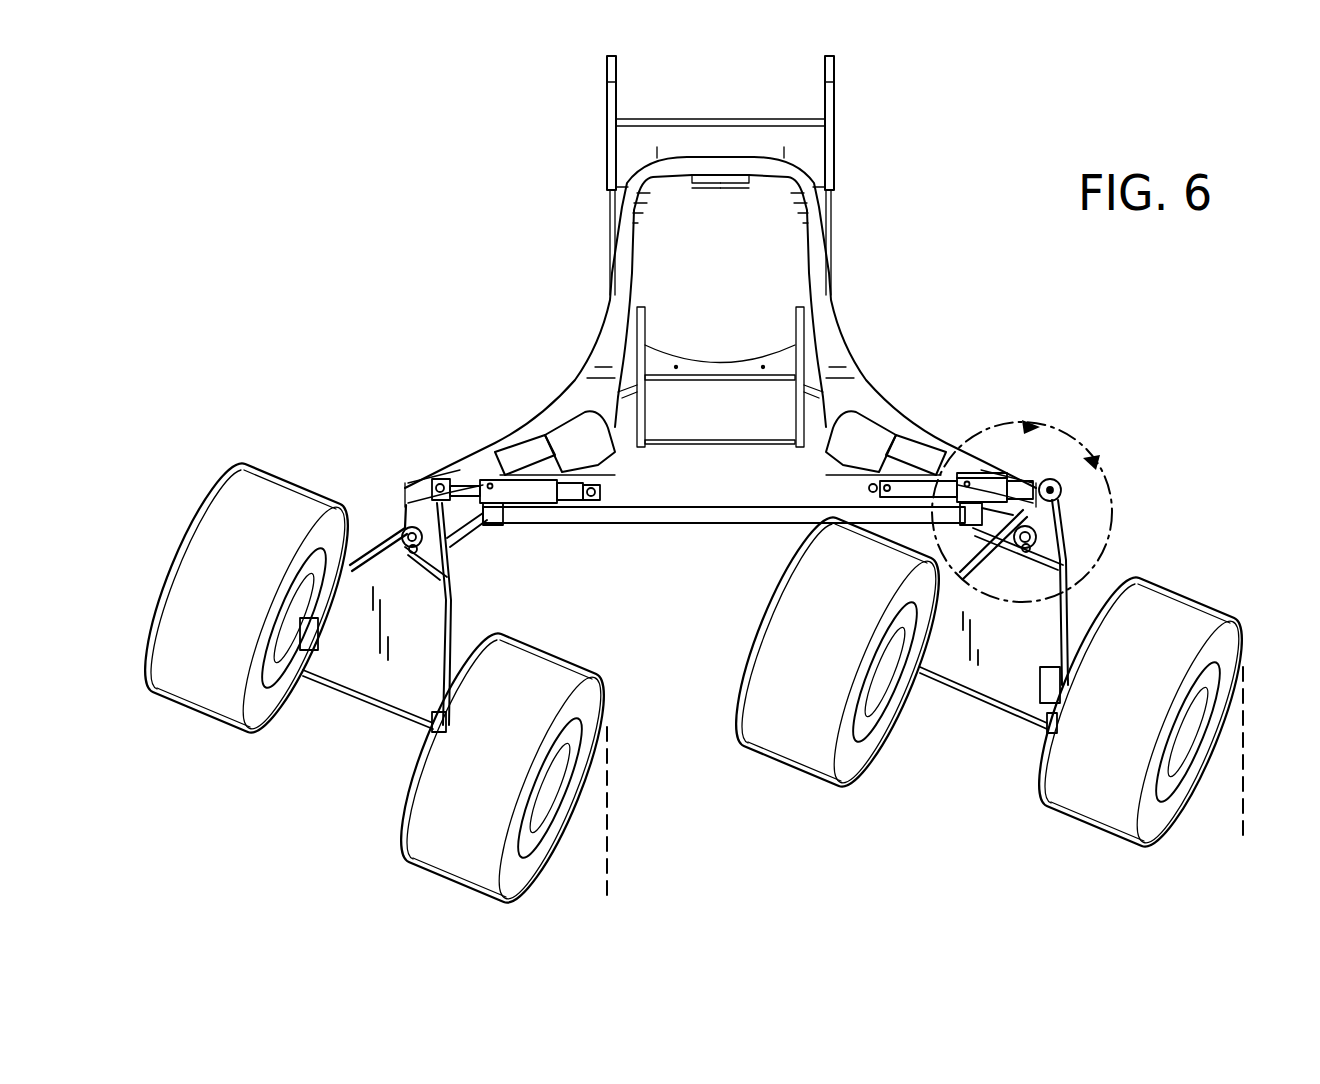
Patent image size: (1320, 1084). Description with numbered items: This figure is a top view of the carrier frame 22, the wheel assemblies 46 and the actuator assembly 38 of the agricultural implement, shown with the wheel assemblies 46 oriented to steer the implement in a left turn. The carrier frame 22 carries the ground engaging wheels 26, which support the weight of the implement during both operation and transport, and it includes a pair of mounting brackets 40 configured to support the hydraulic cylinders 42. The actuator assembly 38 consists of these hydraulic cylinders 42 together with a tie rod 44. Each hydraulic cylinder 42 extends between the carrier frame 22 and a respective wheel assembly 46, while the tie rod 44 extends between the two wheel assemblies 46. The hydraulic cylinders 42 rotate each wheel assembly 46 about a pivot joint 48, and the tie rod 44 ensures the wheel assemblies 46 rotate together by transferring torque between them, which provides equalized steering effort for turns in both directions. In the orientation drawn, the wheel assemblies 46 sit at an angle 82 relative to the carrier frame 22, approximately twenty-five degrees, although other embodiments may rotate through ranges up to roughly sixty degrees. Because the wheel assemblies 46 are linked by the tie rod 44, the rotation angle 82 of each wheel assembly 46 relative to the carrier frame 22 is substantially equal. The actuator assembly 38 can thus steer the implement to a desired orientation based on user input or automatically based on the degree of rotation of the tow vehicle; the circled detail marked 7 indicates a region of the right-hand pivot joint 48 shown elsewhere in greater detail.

The carrier frame 22 is at (820, 264).
The ground engaging wheels 26 is at (206, 703).
The actuator assembly 38 is at (488, 402).
The mounting brackets 40 is at (605, 470).
The hydraulic cylinders 42 is at (522, 497).
The tie rod 44 is at (723, 522).
The wheel assemblies 46 is at (398, 690).
The pivot joint 48 is at (393, 527).
The angle 82 is at (607, 797).
The rotation direction indicator 7 is at (1022, 496).